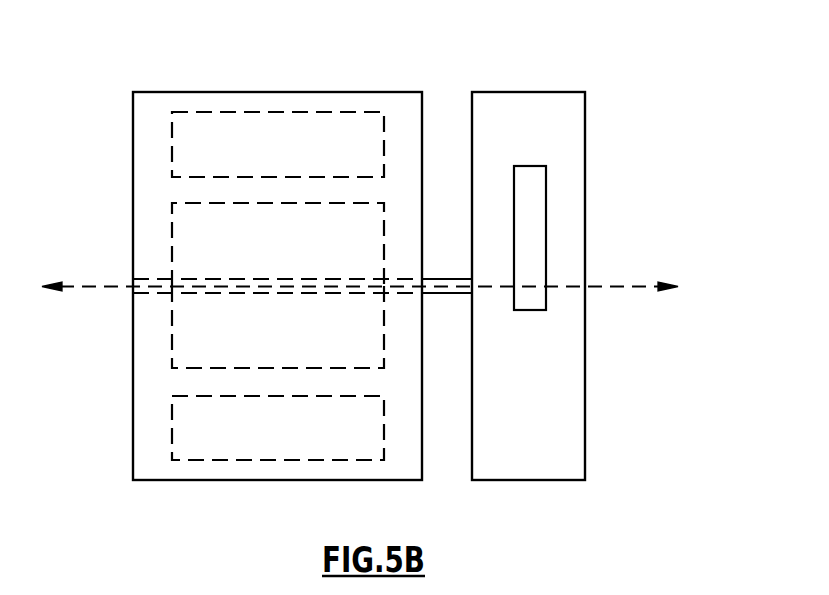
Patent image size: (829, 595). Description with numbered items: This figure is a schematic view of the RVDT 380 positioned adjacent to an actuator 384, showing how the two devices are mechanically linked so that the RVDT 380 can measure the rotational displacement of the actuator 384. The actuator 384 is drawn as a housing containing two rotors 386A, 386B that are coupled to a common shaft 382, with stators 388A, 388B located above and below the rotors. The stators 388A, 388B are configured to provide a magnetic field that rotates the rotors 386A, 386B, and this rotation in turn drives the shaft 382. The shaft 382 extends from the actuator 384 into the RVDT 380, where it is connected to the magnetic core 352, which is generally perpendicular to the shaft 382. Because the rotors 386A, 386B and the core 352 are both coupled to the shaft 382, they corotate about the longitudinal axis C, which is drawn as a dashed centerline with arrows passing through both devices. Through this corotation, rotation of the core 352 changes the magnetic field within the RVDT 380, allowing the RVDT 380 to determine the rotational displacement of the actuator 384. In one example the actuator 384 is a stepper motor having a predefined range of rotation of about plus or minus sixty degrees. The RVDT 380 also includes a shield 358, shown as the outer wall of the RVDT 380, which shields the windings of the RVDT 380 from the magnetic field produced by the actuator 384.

The actuator 384 is at (133, 336).
The stator 388A is at (206, 112).
The rotor 386A is at (172, 240).
The rotor 386B is at (172, 334).
The stator 388B is at (206, 462).
The shaft 382 is at (447, 294).
The RVDT 380 is at (577, 286).
The shield 358 is at (585, 125).
The magnetic core 352 is at (546, 220).
The longitudinal axis C is at (623, 287).